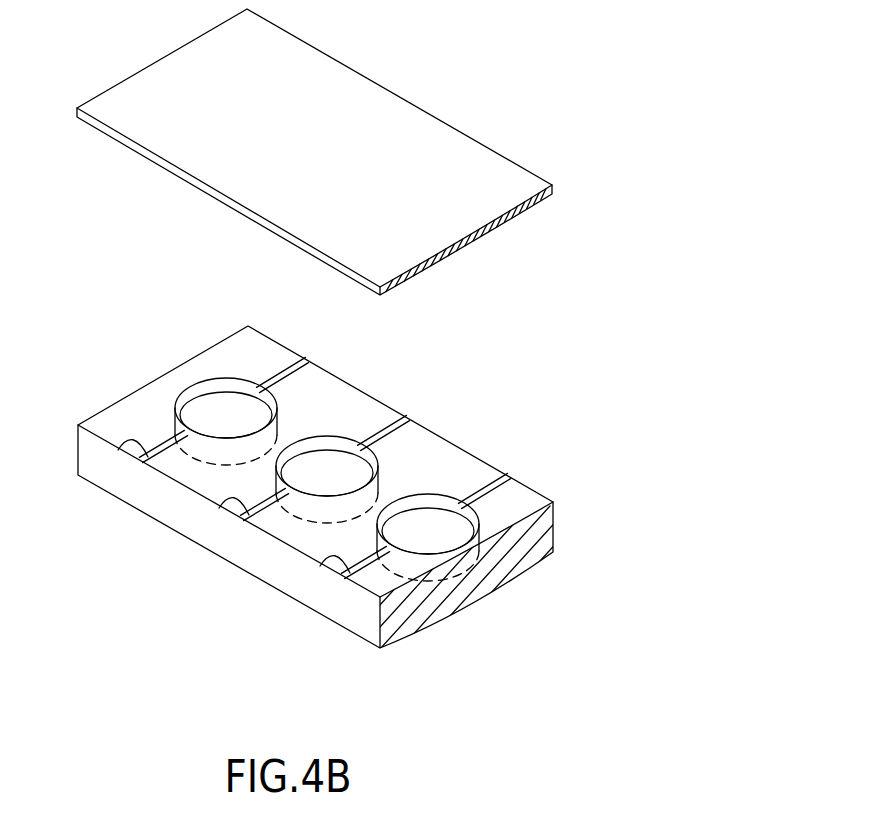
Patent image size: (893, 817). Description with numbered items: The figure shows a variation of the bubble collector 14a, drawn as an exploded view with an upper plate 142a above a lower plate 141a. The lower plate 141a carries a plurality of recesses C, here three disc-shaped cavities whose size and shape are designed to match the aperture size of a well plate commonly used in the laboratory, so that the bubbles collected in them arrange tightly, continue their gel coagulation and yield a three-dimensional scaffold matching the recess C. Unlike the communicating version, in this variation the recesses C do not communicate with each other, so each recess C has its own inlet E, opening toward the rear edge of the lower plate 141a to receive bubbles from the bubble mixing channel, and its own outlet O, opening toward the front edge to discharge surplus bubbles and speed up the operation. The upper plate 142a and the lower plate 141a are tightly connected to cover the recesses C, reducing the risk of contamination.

The bubble collector 14a is at (305, 152).
The upper plate 142a is at (437, 137).
The lower plate 141a is at (132, 418).
The inlet E is at (291, 366).
The outlet O is at (119, 450).
The recess C is at (438, 495).